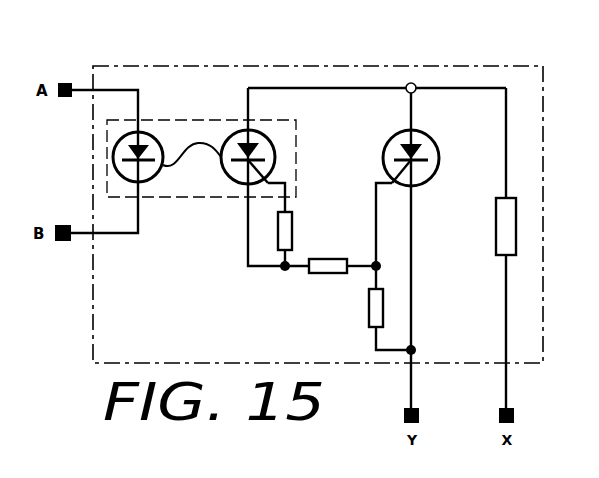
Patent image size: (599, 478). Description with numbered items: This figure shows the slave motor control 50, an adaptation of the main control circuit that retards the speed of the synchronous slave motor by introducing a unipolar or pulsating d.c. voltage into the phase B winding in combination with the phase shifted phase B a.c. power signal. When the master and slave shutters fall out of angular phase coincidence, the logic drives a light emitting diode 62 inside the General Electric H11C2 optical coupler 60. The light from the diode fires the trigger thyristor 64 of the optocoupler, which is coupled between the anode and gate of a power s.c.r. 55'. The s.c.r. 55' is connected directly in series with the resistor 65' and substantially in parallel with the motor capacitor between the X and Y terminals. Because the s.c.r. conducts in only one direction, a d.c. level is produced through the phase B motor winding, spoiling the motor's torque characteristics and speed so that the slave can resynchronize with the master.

The slave motor control circuit 50 is at (230, 86).
The optical coupler 60 is at (218, 158).
The light emitting diode 62 is at (143, 183).
The trigger thyristor 64 is at (275, 161).
The power s.c.r. 55' is at (392, 144).
The resistor 65' is at (472, 239).